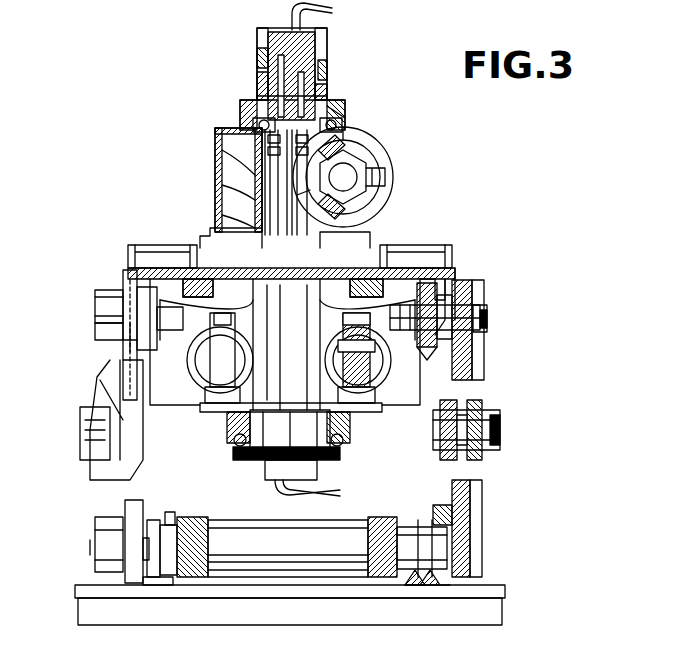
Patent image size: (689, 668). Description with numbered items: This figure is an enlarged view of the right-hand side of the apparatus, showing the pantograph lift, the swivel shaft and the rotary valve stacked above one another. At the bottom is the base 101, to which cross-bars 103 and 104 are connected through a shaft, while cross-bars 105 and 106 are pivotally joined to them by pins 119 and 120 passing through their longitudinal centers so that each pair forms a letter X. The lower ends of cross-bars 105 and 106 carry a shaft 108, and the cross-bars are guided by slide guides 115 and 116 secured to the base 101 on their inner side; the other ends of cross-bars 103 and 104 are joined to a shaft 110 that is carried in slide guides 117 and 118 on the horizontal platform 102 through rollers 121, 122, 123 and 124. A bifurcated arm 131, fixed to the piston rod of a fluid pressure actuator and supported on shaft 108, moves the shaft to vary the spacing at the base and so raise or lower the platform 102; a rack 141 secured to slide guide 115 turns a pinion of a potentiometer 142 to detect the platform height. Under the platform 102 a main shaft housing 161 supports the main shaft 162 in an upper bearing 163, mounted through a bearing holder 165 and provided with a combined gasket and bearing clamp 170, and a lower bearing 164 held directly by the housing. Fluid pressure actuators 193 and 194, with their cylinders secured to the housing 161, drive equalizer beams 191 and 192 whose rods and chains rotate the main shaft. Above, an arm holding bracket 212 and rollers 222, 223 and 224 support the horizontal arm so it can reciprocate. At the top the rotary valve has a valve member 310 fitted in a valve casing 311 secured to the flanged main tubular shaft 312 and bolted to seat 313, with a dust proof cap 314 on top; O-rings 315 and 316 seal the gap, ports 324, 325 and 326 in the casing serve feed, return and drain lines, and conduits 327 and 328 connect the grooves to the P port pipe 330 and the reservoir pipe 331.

The base 101 is at (175, 612).
The horizontal platform 102 is at (128, 279).
The cross-bar 103 is at (97, 380).
The cross-bar 104 is at (470, 360).
The cross-bar 105 is at (95, 520).
The cross-bar 106 is at (470, 498).
The shaft 108 is at (268, 560).
The shaft 110 is at (427, 345).
The slide guide 115 is at (155, 585).
The slide guide 116 is at (445, 585).
The slide guide 117 is at (100, 300).
The slide guide 118 is at (446, 282).
The pin 119 is at (80, 436).
The pin 120 is at (455, 460).
The roller 121 is at (120, 330).
The roller 122 is at (455, 298).
The roller 123 is at (120, 352).
The roller 124 is at (480, 322).
The bifurcated arm 131 is at (380, 575).
The rack 141 is at (152, 518).
The potentiometer 142 is at (170, 512).
The main shaft housing 161 is at (448, 256).
The main shaft 162 is at (340, 455).
The upper bearing 163 is at (128, 250).
The lower bearing 164 is at (227, 440).
The bearing holder 165 is at (440, 245).
The combined gasket and bearing clamp 170 is at (205, 236).
The equalizer beam 191 is at (205, 398).
The equalizer beam 192 is at (375, 400).
The fluid pressure actuator 193 is at (194, 378).
The fluid pressure actuator 194 is at (390, 380).
The arm holding bracket 212 is at (385, 180).
The roller 222 is at (390, 168).
The roller 223 is at (340, 140).
The roller 224 is at (340, 212).
The valve member 310 is at (292, 30).
The valve casing 311 is at (316, 50).
The main tubular shaft 312 is at (215, 228).
The seat 313 is at (330, 118).
The dust proof cap 314 is at (258, 30).
The O-ring 315 is at (327, 36).
The O-ring 316 is at (327, 88).
The port 324 is at (257, 80).
The port 325 is at (330, 66).
The port 326 is at (257, 58).
The conduit 327 is at (345, 104).
The conduit 328 is at (240, 104).
The P port pipe 330 is at (222, 160).
The pipe 331 is at (222, 136).